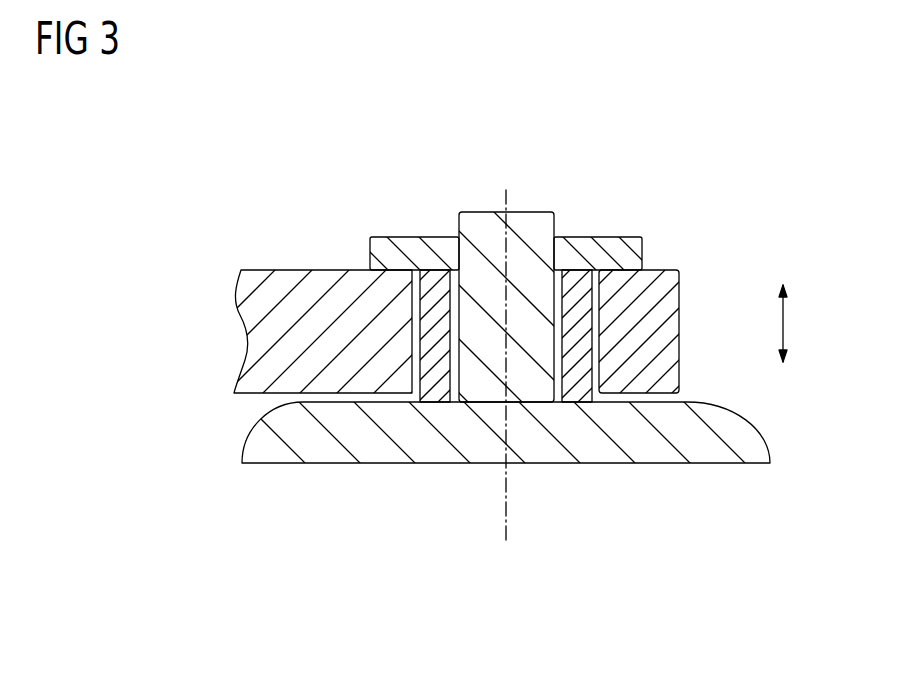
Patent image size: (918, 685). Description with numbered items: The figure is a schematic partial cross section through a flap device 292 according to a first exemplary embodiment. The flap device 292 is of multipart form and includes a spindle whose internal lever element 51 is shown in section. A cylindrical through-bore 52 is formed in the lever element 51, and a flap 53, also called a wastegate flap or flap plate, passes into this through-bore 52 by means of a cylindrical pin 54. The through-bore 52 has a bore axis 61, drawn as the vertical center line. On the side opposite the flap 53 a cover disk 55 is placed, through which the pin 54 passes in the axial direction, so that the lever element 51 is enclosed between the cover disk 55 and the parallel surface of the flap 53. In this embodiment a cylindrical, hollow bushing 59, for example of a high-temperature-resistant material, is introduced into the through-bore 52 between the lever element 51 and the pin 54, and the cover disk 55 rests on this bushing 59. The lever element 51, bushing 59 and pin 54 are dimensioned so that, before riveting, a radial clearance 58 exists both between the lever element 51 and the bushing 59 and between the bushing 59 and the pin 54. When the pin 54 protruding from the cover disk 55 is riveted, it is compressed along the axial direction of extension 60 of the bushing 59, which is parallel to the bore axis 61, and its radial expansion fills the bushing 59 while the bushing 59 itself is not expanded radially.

The flap device 292 is at (717, 142).
The lever element 51 is at (262, 287).
The through-bore 52 is at (603, 328).
The flap 53 is at (705, 447).
The pin 54 is at (487, 225).
The cover disk 55 is at (622, 252).
The radial clearance 58 is at (455, 402).
The bushing 59 is at (577, 373).
The direction of extension 60 is at (783, 323).
The bore axis 61 is at (508, 528).